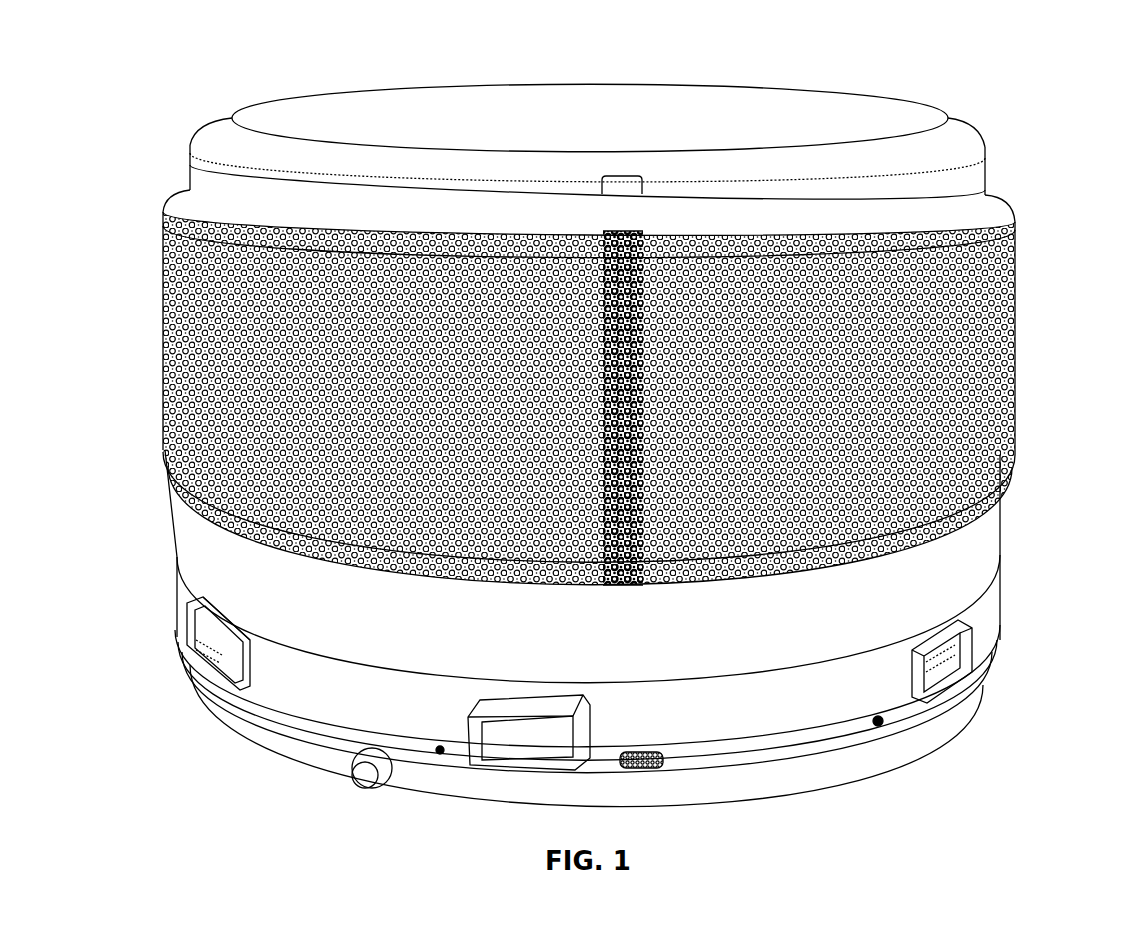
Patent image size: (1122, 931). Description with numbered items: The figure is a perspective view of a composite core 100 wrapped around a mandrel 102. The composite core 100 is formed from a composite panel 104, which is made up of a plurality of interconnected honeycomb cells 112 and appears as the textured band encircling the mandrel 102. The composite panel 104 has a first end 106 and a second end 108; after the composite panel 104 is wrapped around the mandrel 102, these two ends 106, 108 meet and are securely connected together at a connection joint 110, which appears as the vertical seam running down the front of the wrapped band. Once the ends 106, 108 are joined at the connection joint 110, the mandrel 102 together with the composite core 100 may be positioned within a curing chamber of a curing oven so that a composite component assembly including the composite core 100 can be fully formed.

The composite core 100 is at (1022, 350).
The mandrel 102 is at (971, 177).
The composite panel 104 is at (181, 437).
The first end 106 is at (623, 230).
The second end 108 is at (650, 232).
The connection joint 110 is at (630, 586).
The honeycomb cells 112 is at (781, 228).